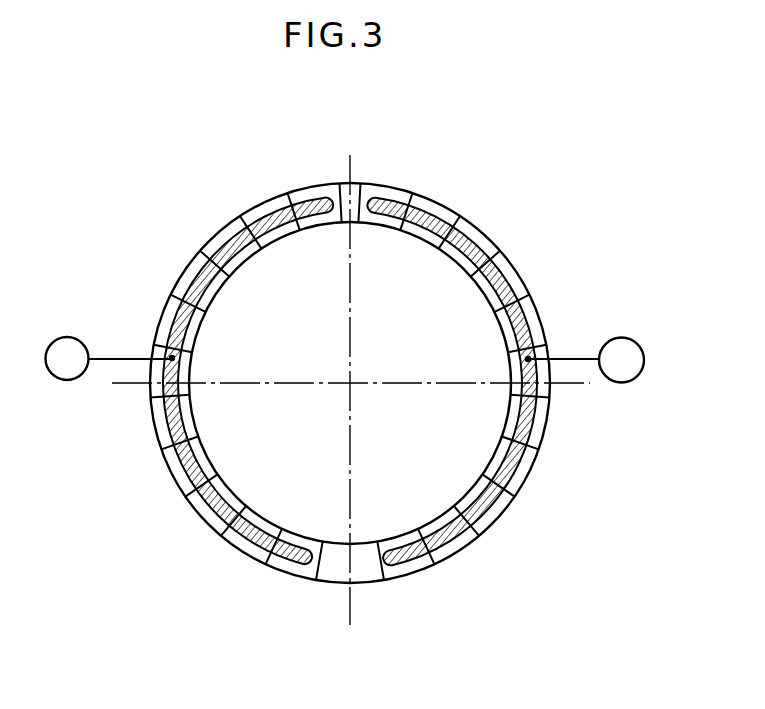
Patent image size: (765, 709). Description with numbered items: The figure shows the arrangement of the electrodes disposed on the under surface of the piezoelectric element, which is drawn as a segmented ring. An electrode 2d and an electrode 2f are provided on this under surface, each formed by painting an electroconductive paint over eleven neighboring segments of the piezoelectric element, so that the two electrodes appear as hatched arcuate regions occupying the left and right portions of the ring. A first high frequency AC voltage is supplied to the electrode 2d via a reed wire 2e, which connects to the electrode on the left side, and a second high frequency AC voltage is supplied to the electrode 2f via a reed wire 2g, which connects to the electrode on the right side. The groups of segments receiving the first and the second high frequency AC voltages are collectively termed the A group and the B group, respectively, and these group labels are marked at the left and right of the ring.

The electrode 2d is at (233, 243).
The reed wire 2e is at (123, 347).
The electrode 2f is at (467, 239).
The reed wire 2g is at (575, 357).